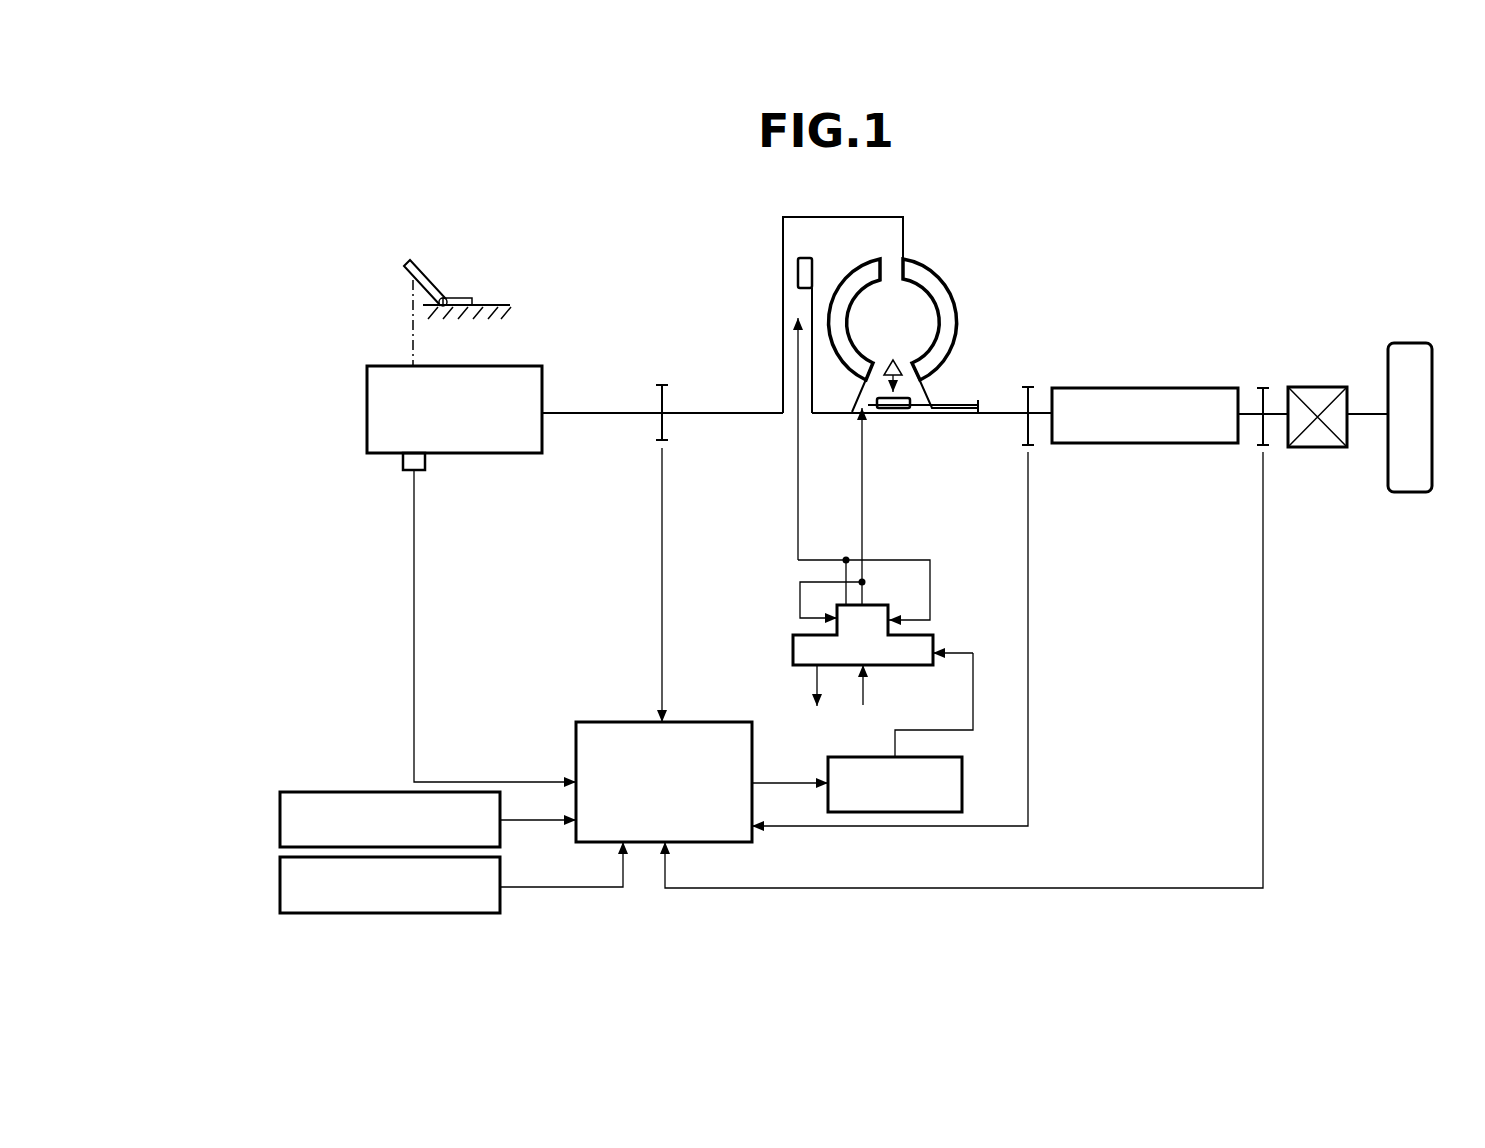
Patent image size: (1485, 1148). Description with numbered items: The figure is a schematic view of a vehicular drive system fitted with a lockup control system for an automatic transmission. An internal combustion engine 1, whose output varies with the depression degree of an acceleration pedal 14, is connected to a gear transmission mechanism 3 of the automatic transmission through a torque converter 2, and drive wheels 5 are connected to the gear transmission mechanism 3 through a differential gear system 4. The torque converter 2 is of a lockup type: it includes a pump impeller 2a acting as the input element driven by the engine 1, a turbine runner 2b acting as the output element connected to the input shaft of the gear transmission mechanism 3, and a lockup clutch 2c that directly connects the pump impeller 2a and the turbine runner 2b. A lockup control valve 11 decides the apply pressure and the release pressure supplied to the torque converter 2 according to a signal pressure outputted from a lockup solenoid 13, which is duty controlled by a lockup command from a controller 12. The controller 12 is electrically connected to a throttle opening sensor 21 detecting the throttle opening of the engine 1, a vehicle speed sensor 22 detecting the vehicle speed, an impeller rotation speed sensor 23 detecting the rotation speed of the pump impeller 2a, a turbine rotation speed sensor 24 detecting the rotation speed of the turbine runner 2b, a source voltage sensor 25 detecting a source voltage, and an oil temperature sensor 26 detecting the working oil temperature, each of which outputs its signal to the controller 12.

The internal combustion engine 1 is at (518, 366).
The torque converter 2 is at (911, 315).
The pump impeller 2a is at (958, 326).
The turbine runner 2b is at (858, 275).
The lockup clutch 2c is at (803, 270).
The gear transmission mechanism 3 is at (1145, 388).
The differential gear system 4 is at (1317, 387).
The drive wheels 5 is at (1408, 343).
The lockup control valve 11 is at (933, 637).
The controller 12 is at (718, 722).
The lockup solenoid 13 is at (963, 783).
The acceleration pedal 14 is at (430, 277).
The throttle opening sensor 21 is at (403, 468).
The vehicle speed sensor 22 is at (1265, 428).
The impeller rotation speed sensor 23 is at (660, 425).
The turbine rotation speed sensor 24 is at (1030, 425).
The source voltage sensor 25 is at (280, 819).
The oil temperature sensor 26 is at (280, 884).